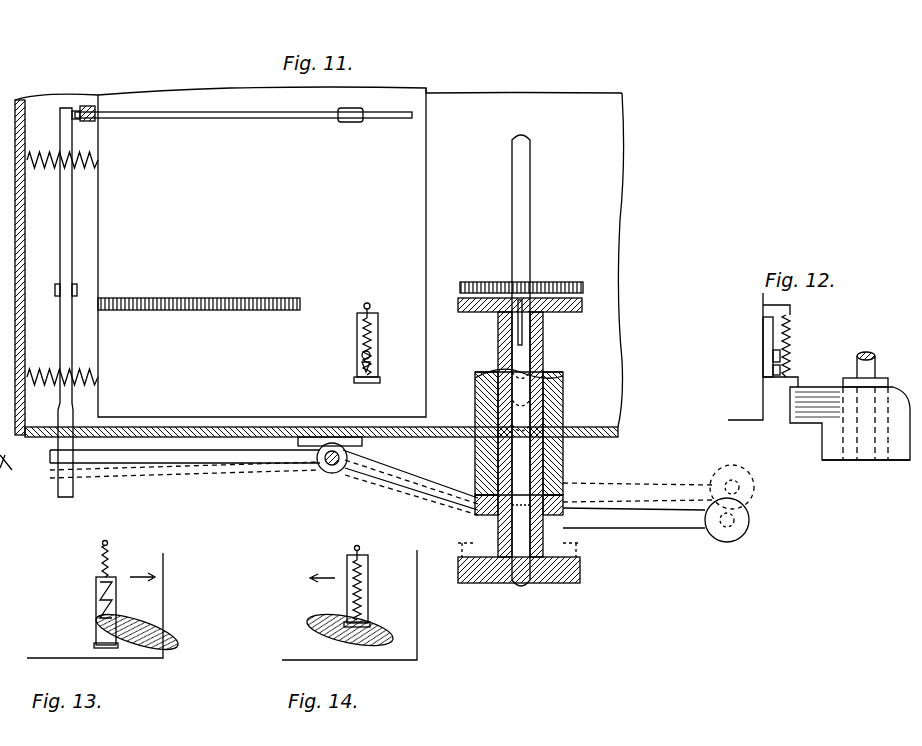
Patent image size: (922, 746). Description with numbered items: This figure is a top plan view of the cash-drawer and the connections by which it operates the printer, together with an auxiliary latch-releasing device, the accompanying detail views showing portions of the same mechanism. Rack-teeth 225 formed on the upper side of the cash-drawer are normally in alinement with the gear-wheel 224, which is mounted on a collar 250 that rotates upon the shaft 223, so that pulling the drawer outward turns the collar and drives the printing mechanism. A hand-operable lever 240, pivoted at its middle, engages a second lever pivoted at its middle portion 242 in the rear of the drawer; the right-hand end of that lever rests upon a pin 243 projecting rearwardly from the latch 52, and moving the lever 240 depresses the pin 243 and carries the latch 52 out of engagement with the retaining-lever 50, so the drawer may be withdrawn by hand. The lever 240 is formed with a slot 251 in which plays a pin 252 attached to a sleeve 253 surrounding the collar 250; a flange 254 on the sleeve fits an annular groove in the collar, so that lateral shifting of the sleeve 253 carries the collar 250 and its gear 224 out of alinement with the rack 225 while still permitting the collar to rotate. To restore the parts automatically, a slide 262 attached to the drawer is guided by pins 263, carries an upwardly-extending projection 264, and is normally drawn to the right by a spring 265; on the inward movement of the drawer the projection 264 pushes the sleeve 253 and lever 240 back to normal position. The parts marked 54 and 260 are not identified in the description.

In FIG. 11, the retaining-lever 50 is at (270, 118).
In FIG. 11, the latch 52 is at (90, 106).
In FIG. 11, the casing 54 is at (262, 252).
In FIG. 11, the shaft 223 is at (533, 222).
In FIG. 12, the shaft 223 is at (900, 345).
In FIG. 11, the gear-wheel 224 is at (540, 310).
In FIG. 11, the rack-teeth 225 is at (225, 290).
In FIG. 11, the hand-operable lever 240 is at (678, 527).
In FIG. 11, the middle portion (pivot of lever) 242 is at (77, 290).
In FIG. 11, the pin 243 is at (75, 108).
In FIG. 11, the collar 250 is at (543, 350).
In FIG. 11, the slot 251 is at (478, 508).
In FIG. 11, the pin 252 is at (637, 506).
In FIG. 11, the sleeve 253 is at (563, 462).
In FIG. 12, the sleeve 253 is at (903, 450).
In FIG. 11, the flange 254 is at (538, 530).
In FIG. 11, the spring 260 is at (98, 165).
In FIG. 11, the slide 262 is at (357, 333).
In FIG. 12, the slide 262 is at (763, 333).
In FIG. 13, the slide 262 is at (96, 588).
In FIG. 14, the slide 262 is at (385, 540).
In FIG. 11, the pins 263 is at (362, 368).
In FIG. 12, the pins 263 is at (773, 370).
In FIG. 13, the pins 263 is at (100, 603).
In FIG. 11, the upwardly-extending projection 264 is at (360, 383).
In FIG. 12, the upwardly-extending projection 264 is at (763, 385).
In FIG. 13, the upwardly-extending projection 264 is at (94, 646).
In FIG. 14, the upwardly-extending projection 264 is at (417, 605).
In FIG. 11, the spring 265 is at (372, 330).
In FIG. 12, the spring 265 is at (790, 335).
In FIG. 13, the spring 265 is at (100, 558).
In FIG. 14, the spring 265 is at (347, 575).